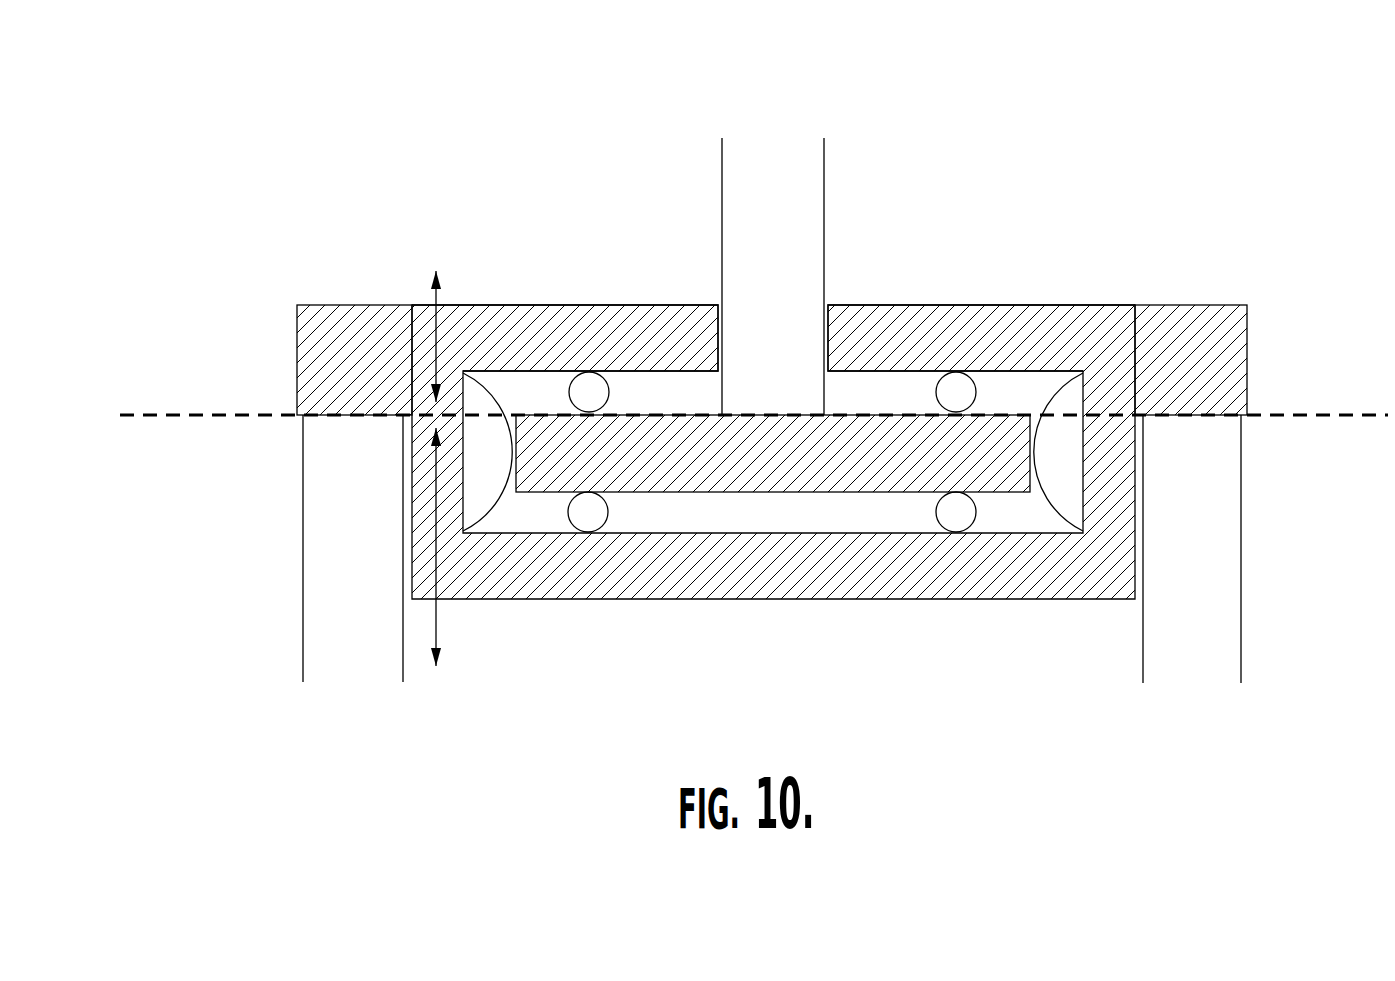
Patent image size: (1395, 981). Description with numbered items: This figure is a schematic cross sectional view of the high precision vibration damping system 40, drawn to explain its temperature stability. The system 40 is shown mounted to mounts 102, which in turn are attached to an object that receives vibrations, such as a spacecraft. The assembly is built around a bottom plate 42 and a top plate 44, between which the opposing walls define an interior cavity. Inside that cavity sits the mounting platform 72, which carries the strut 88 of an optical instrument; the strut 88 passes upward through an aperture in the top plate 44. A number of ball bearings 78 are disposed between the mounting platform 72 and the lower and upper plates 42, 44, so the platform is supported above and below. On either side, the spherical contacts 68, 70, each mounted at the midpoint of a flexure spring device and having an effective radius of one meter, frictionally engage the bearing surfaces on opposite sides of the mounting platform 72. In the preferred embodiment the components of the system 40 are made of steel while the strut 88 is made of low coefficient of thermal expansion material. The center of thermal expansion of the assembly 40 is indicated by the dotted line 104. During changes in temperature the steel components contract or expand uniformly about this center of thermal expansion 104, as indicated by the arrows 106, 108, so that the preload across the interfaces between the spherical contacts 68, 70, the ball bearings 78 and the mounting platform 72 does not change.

The vibration damping system 40 is at (228, 205).
The bottom plate 42 is at (856, 578).
The top plate 44 is at (682, 320).
The spherical contact 68 is at (480, 385).
The spherical contact 70 is at (1070, 395).
The mounting platform 72 is at (990, 440).
The ball bearings 78 is at (594, 395).
The strut 88 is at (853, 193).
The mounts 102 is at (318, 552).
The center of thermal expansion 104 is at (185, 412).
The arrow 106 is at (432, 300).
The arrow 108 is at (437, 625).